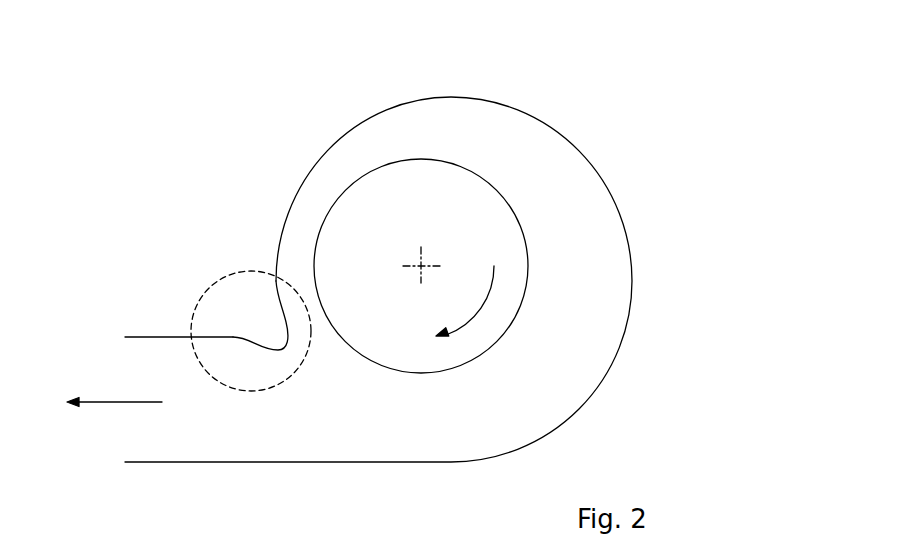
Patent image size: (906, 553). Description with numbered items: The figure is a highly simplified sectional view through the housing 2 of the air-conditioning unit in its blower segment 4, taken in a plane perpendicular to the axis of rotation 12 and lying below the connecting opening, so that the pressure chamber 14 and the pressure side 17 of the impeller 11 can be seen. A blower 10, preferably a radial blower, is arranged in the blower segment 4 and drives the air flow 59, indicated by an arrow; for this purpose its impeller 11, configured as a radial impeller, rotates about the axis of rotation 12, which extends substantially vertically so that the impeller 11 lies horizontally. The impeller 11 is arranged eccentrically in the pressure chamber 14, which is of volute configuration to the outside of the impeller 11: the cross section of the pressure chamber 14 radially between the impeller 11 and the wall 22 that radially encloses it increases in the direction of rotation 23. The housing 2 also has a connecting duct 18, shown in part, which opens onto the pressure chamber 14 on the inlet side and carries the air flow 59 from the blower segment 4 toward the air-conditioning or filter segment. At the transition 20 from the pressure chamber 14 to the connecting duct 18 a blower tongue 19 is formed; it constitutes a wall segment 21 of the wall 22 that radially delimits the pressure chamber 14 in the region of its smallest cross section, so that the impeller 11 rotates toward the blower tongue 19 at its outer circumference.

The housing 2 is at (666, 110).
The blower segment 4 is at (647, 190).
The blower 10 is at (441, 153).
The impeller 11 is at (512, 238).
The axis of rotation 12 is at (420, 268).
The pressure chamber 14 is at (538, 150).
The pressure side 17 is at (378, 279).
The connecting duct 18 is at (150, 350).
The blower tongue 19 is at (288, 355).
The transition 20 is at (221, 283).
The wall segment 21 is at (290, 327).
The wall 22 is at (333, 147).
The direction of rotation 23 is at (482, 308).
The air flow 59 is at (108, 402).